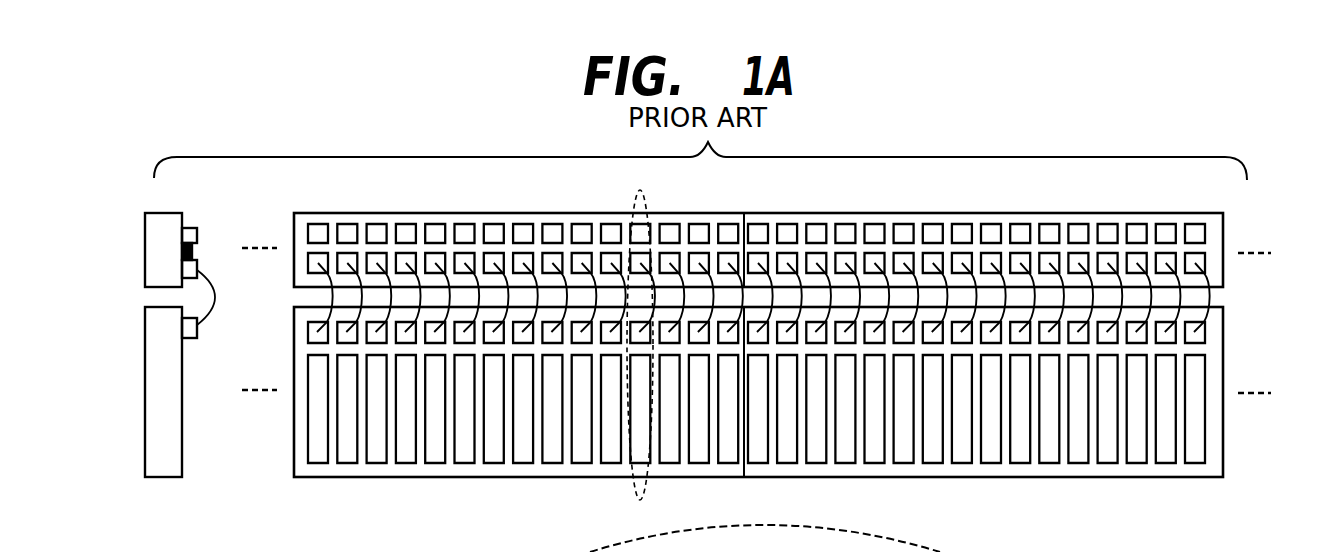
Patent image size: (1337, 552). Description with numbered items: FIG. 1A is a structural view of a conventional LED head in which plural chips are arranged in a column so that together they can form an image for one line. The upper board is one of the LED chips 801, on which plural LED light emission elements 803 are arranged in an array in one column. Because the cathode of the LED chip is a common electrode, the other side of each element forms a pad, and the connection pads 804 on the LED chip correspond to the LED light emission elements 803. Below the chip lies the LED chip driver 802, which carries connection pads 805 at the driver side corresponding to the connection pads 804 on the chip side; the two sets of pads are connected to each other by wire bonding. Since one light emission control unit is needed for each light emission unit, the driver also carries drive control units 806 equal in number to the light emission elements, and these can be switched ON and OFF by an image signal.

The LED chip 801 is at (312, 213).
The LED chip driver 802 is at (333, 478).
The LED light emission elements 803 is at (1203, 235).
The connection pads 804 is at (1203, 263).
The connection pads at the driver side 805 is at (1203, 338).
The drive control units 806 is at (610, 458).